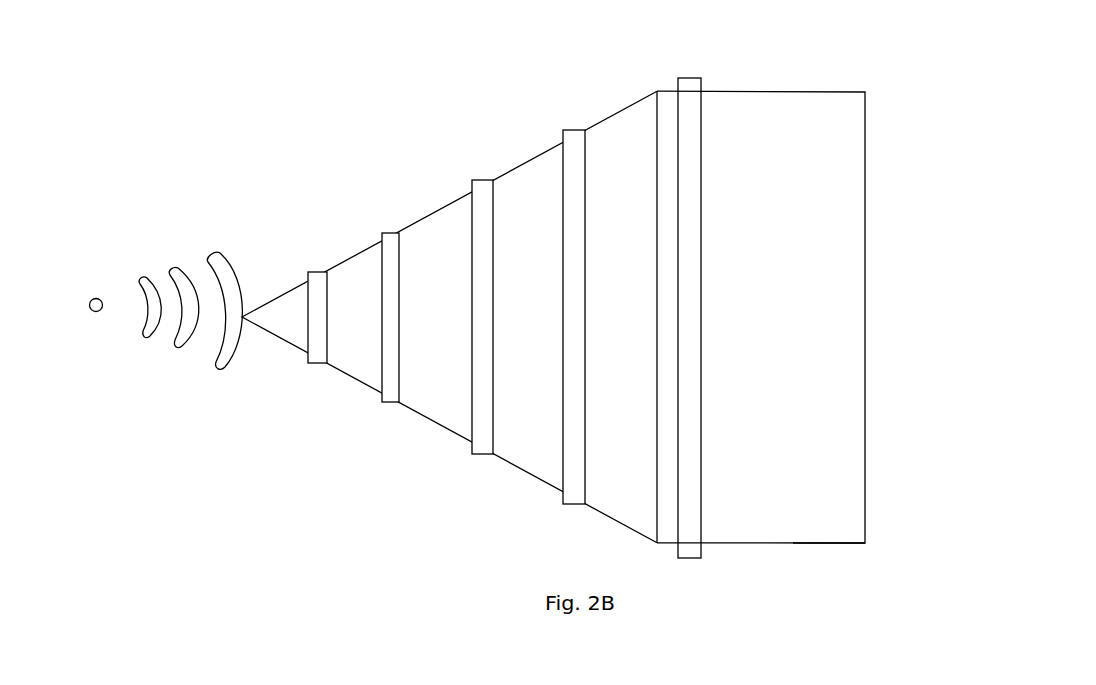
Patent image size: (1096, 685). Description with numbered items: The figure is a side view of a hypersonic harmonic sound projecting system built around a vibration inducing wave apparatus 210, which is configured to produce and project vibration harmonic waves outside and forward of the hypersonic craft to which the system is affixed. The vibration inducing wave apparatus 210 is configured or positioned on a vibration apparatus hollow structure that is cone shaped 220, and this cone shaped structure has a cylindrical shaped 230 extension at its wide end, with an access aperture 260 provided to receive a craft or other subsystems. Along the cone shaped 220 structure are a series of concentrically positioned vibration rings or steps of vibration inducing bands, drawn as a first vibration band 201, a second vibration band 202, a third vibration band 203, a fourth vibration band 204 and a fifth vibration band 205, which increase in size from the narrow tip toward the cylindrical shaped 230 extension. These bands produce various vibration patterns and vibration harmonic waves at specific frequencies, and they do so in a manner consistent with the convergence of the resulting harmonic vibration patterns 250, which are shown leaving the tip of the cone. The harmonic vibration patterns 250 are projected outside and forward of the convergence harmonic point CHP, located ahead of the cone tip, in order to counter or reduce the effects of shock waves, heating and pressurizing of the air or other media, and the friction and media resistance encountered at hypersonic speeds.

The convergence harmonic point CHP is at (92, 288).
The harmonic vibration patterns 250 is at (175, 257).
The first vibration band 201 is at (317, 287).
The second vibration band 202 is at (384, 243).
The third vibration band 203 is at (475, 193).
The fourth vibration band 204 is at (570, 145).
The fifth vibration band 205 is at (690, 91).
The vibration inducing wave apparatus 210 is at (853, 70).
The cone shaped hollow structure 220 is at (433, 395).
The cylindrical shaped extension 230 is at (793, 503).
The access aperture 260 is at (887, 360).